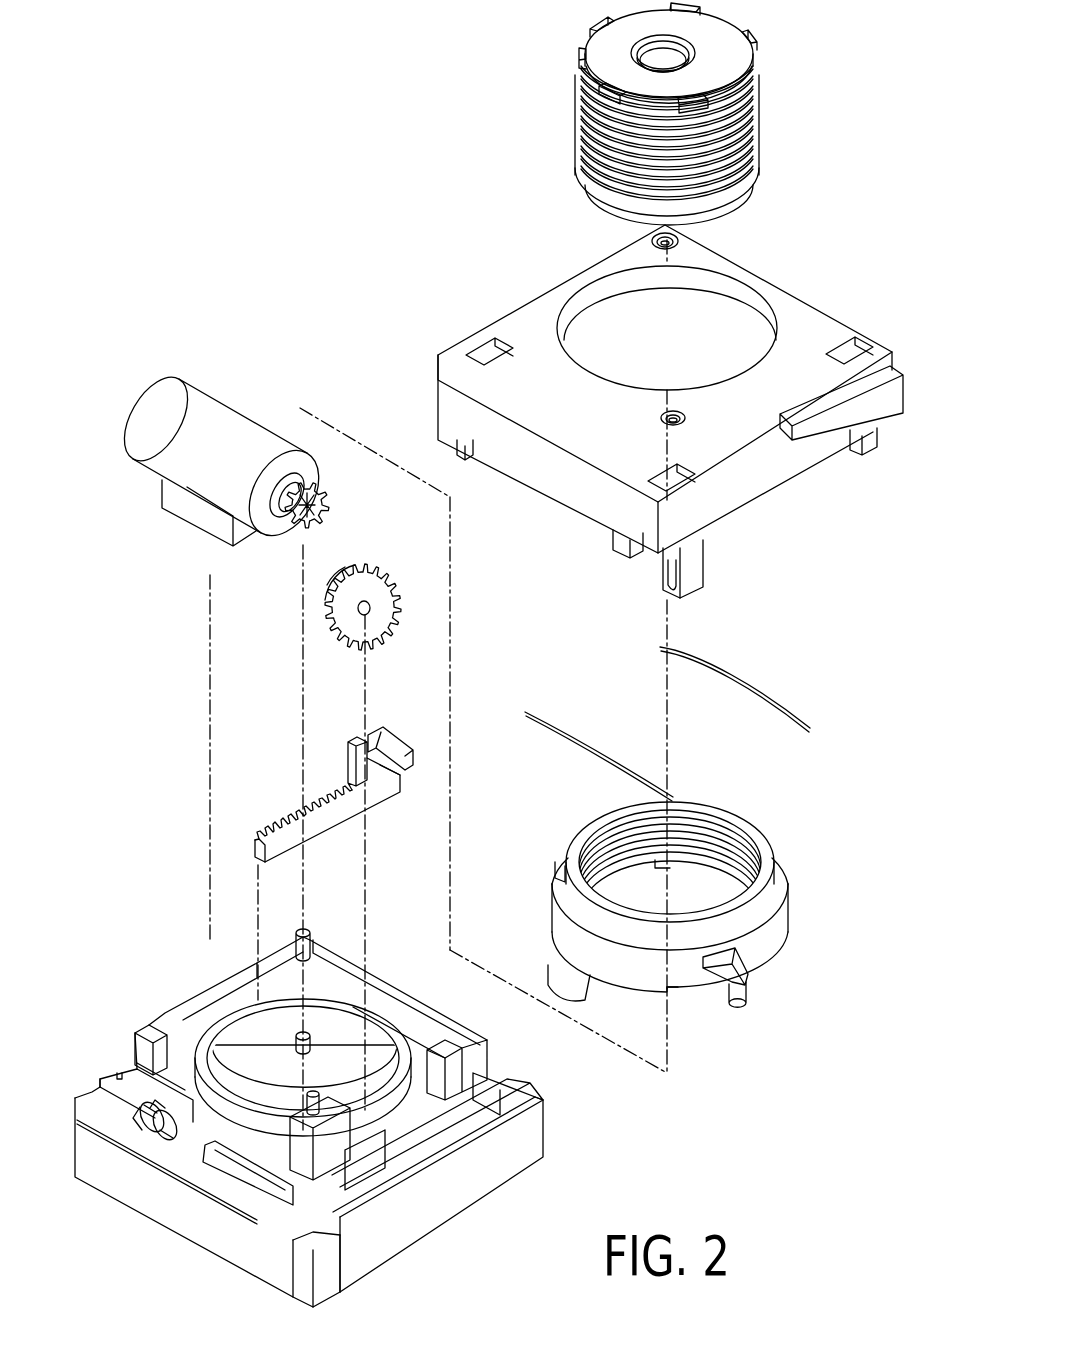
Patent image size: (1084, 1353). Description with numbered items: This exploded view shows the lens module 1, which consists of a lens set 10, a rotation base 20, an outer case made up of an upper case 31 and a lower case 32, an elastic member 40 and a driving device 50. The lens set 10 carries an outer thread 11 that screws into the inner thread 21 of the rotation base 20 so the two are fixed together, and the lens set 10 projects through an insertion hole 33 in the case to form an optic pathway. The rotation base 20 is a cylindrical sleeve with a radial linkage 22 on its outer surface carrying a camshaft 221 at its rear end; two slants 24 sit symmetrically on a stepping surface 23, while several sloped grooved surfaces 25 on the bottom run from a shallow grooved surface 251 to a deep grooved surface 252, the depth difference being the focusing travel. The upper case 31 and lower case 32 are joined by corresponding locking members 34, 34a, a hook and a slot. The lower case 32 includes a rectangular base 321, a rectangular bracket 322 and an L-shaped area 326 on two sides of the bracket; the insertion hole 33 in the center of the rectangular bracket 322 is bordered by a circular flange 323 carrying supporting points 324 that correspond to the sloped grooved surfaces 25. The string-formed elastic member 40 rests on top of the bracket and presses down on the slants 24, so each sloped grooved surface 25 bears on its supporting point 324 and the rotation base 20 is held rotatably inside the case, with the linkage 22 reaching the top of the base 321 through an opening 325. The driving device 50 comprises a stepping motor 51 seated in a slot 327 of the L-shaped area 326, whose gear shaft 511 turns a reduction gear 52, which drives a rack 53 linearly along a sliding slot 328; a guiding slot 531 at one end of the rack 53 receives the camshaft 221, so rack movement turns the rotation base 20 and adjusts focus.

The lens module 1 is at (353, 292).
The lens set 10 is at (735, 114).
The outer thread 11 is at (762, 134).
The rotation base 20 is at (677, 919).
The inner thread 21 is at (700, 822).
The radial linkage 22 is at (772, 962).
The camshaft 221 is at (752, 1005).
The stepping surface 23 is at (556, 870).
The slant 24 is at (562, 915).
The sloped grooved surface 25 is at (628, 1010).
The shallow grooved surface 251 is at (562, 986).
The deep grooved surface 252 is at (685, 1010).
The upper case 31 is at (686, 416).
The lower case 32 is at (393, 1106).
The insertion hole 33 is at (722, 297).
The locking member 34 is at (872, 456).
The locking member 34a is at (110, 1087).
The elastic member 40 is at (715, 672).
The driving device 50 is at (108, 830).
The stepping motor 51 is at (200, 482).
The gear shaft 511 is at (326, 486).
The reduction gear 52 is at (378, 565).
The rack 53 is at (379, 755).
The guiding slot 531 is at (386, 732).
The rectangular base 321 is at (415, 1207).
The rectangular bracket 322 is at (148, 1025).
The circular flange 323 is at (242, 1012).
The supporting point 324 is at (150, 1046).
The opening 325 is at (396, 1116).
The L-shaped area 326 is at (150, 1160).
The slot 327 is at (225, 1192).
The sliding slot 328 is at (380, 1152).